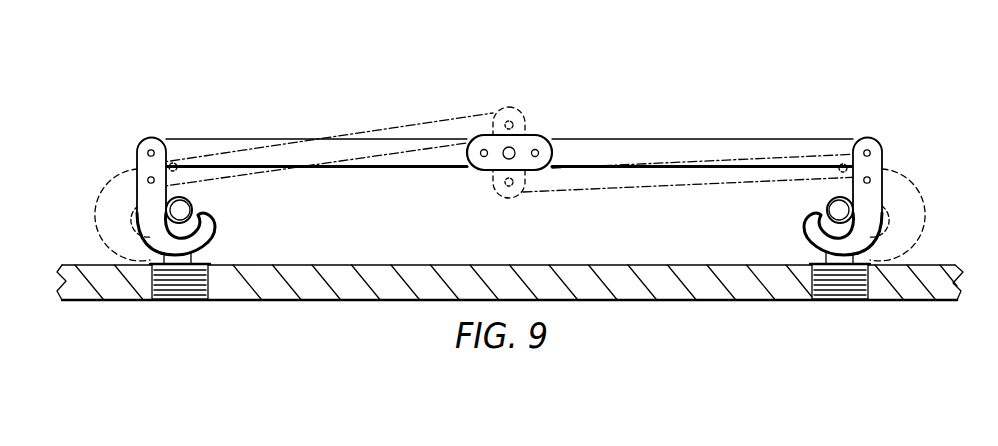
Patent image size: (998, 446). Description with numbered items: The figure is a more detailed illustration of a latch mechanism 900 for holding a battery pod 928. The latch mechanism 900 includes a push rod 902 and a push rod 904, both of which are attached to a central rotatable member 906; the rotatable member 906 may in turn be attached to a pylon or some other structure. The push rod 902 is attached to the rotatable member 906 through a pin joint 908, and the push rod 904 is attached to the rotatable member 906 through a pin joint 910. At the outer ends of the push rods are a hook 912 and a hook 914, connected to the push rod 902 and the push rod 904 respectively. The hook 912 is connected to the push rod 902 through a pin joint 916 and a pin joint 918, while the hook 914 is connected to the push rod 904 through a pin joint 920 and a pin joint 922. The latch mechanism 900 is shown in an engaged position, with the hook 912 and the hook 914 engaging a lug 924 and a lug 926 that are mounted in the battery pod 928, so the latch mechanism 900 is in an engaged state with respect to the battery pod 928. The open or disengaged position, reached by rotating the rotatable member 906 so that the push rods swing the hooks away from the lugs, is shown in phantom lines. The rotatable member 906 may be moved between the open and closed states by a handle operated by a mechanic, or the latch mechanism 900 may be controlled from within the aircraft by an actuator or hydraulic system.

The latch mechanism 900 is at (603, 72).
The push rod 902 is at (384, 139).
The push rod 904 is at (703, 139).
The rotatable member 906 is at (511, 149).
The pin joint 908 is at (484, 158).
The pin joint 910 is at (535, 158).
The hook 912 is at (216, 224).
The hook 914 is at (812, 218).
The pin joint 916 is at (151, 149).
The pin joint 918 is at (147, 182).
The pin joint 920 is at (867, 149).
The pin joint 922 is at (873, 182).
The lug 924 is at (172, 300).
The lug 926 is at (843, 300).
The battery pod 928 is at (378, 265).